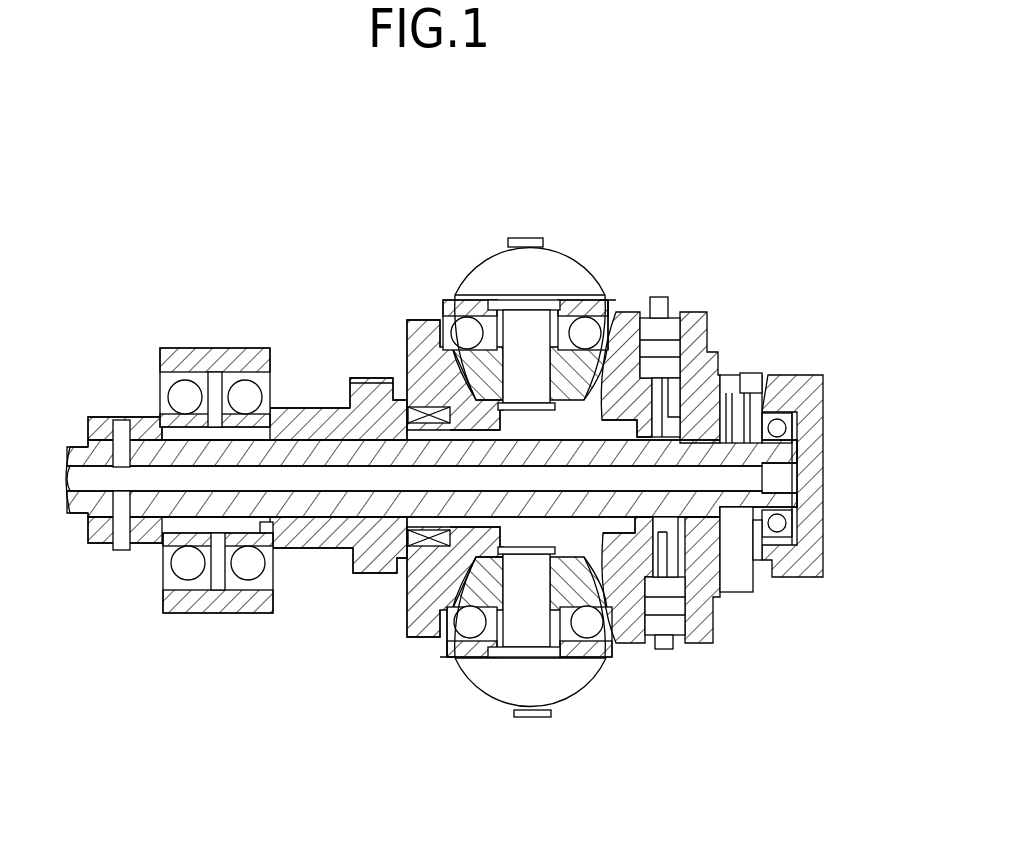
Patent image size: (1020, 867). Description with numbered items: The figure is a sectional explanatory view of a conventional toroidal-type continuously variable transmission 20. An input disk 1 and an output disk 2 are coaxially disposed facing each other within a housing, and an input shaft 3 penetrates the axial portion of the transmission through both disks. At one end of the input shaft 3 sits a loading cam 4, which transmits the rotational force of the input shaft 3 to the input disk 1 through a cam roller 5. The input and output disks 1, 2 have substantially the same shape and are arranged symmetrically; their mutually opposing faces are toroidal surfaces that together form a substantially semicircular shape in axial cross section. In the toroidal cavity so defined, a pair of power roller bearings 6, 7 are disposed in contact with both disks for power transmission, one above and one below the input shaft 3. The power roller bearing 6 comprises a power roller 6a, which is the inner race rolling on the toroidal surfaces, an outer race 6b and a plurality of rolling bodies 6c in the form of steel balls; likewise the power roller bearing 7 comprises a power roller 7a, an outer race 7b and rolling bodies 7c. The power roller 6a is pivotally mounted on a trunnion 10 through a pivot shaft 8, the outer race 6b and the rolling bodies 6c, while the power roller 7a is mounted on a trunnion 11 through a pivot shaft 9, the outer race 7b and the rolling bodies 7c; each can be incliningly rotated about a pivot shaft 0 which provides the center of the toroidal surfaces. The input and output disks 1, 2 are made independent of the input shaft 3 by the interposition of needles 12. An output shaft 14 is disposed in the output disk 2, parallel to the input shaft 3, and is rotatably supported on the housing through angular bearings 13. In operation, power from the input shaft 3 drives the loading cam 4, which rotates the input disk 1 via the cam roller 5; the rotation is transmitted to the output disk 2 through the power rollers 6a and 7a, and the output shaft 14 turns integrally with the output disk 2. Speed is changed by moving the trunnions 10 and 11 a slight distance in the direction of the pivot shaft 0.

The toroidal-type continuously variable transmission 20 is at (700, 193).
The input disk 1 is at (633, 332).
The output disk 2 is at (412, 325).
The input shaft 3 is at (150, 420).
The loading cam 4 is at (700, 645).
The cam roller 5 is at (652, 625).
The power roller bearing 6 is at (404, 225).
The power roller 6a is at (467, 330).
The outer race 6b is at (585, 330).
The rolling bodies 6c is at (620, 302).
The power roller bearing 7 is at (622, 763).
The power roller 7a is at (598, 660).
The outer race 7b is at (457, 660).
The rolling bodies 7c is at (465, 630).
The pivot shaft 8 is at (512, 305).
The pivot shaft 9 is at (525, 637).
The trunnion 10 is at (572, 265).
The trunnion 11 is at (575, 685).
The needles 12 is at (557, 537).
The angular bearings 13 is at (245, 390).
The output shaft 14 is at (352, 392).
The pivot shaft 0 is at (545, 300).